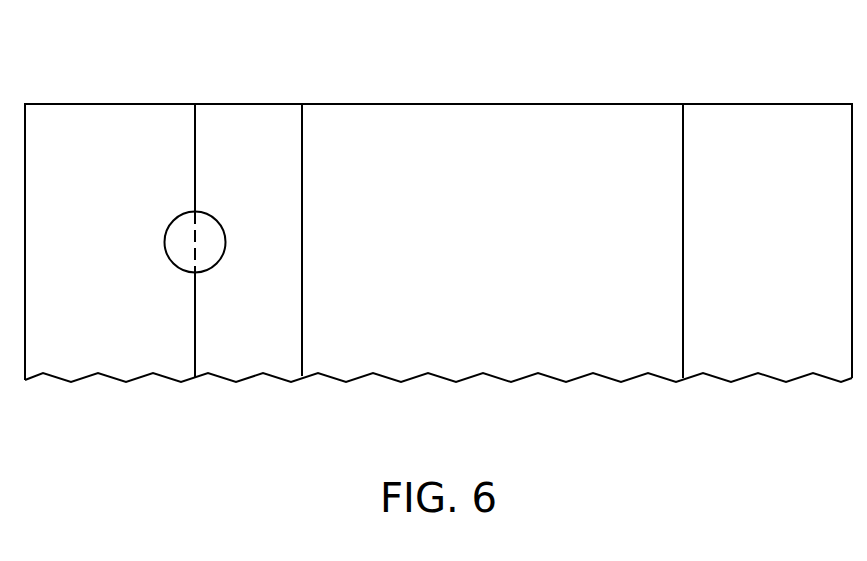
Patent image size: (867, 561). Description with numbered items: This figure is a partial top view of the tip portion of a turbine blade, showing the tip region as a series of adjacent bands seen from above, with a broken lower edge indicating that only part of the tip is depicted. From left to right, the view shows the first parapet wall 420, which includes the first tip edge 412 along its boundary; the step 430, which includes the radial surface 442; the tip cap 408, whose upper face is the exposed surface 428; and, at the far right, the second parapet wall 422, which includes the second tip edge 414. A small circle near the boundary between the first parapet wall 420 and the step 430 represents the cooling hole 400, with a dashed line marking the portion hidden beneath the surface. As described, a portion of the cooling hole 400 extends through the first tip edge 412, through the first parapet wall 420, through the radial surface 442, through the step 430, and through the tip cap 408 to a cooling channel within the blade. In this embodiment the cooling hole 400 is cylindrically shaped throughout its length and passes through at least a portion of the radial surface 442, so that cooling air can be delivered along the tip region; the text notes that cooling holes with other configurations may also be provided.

The cooling hole 400 is at (438, 243).
The tip cap 408 is at (400, 77).
The first tip edge 412 is at (128, 122).
The second tip edge 414 is at (796, 122).
The first parapet wall 420 is at (88, 77).
The second parapet wall 422 is at (740, 76).
The exposed surface 428 is at (478, 122).
The step 430 is at (225, 77).
The radial surface 442 is at (267, 122).